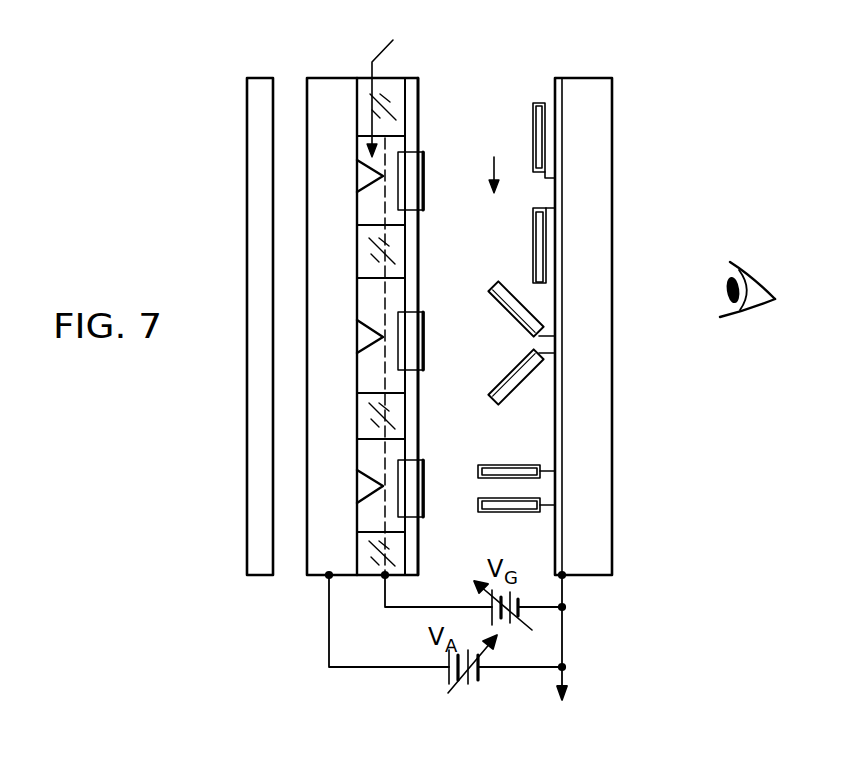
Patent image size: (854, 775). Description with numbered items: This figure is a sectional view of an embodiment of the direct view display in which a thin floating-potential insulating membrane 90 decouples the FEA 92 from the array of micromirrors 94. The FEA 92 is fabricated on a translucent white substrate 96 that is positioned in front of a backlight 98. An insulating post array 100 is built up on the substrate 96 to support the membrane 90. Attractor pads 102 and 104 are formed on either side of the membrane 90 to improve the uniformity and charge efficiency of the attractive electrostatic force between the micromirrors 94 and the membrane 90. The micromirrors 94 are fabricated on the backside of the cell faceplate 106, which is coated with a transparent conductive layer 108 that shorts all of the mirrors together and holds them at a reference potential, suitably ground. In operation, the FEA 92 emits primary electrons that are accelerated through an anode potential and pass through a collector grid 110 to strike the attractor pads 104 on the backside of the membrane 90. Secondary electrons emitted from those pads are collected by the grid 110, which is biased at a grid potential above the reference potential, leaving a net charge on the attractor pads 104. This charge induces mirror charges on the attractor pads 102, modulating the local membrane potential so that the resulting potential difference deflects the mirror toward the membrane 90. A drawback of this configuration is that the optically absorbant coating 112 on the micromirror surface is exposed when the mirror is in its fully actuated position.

The floating-potential insulating membrane 90 is at (410, 100).
The FEA 92 is at (396, 91).
The array of micromirrors 94 is at (494, 161).
The translucent white substrate 96 is at (346, 440).
The backlight 98 is at (258, 465).
The insulating post array 100 is at (397, 238).
The attractor pads 102 is at (424, 189).
The attractor pads 104 is at (398, 313).
The cell faceplate 106 is at (583, 77).
The transparent conductive layer 108 is at (560, 320).
The collector grid 110 is at (386, 378).
The optically absorbant coating 112 is at (527, 393).